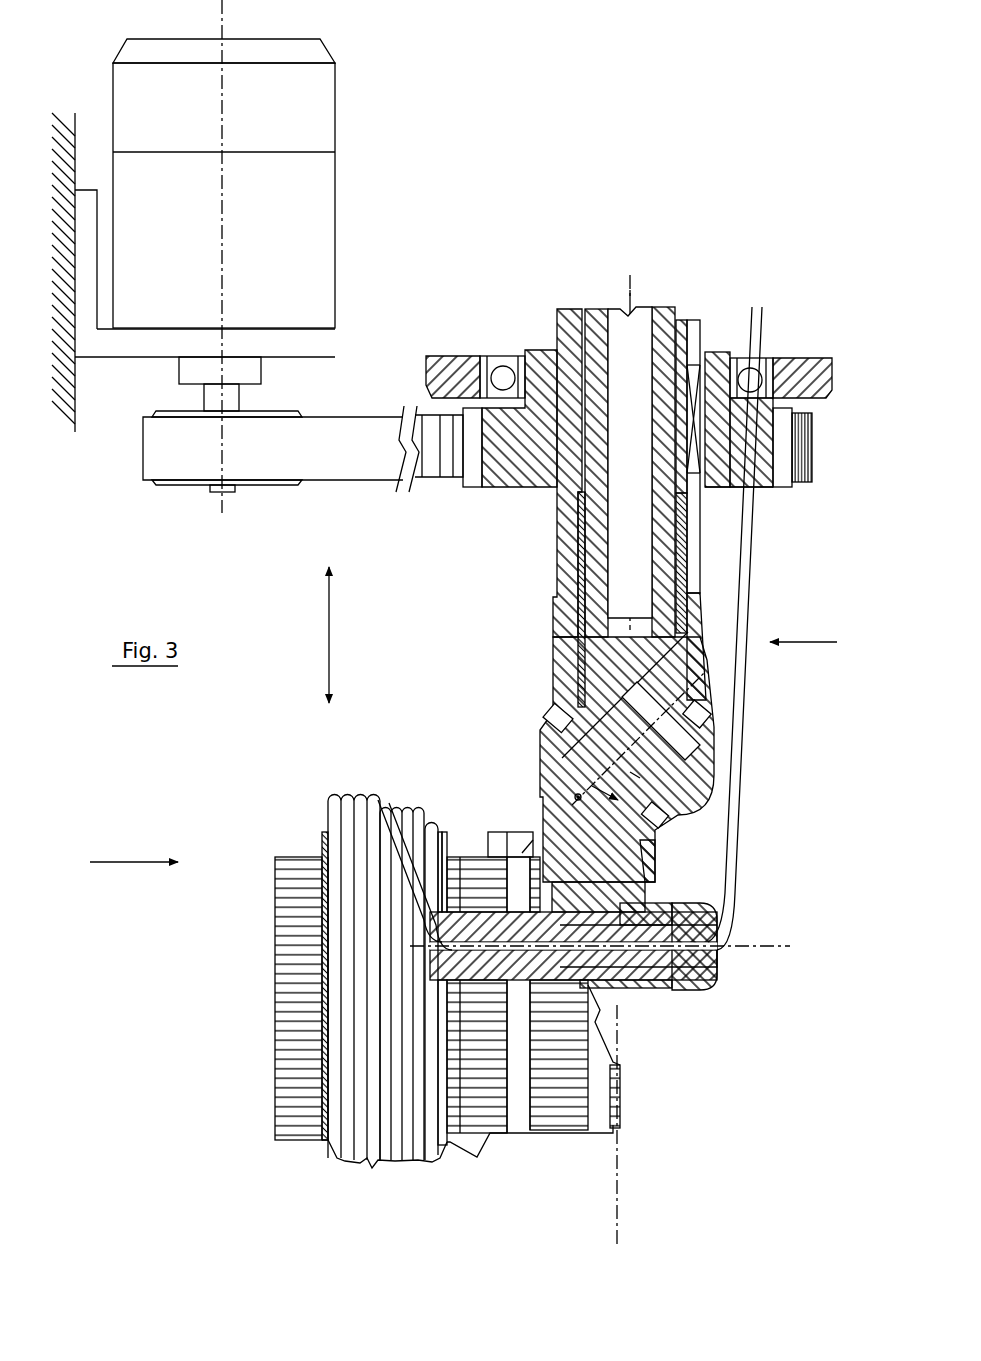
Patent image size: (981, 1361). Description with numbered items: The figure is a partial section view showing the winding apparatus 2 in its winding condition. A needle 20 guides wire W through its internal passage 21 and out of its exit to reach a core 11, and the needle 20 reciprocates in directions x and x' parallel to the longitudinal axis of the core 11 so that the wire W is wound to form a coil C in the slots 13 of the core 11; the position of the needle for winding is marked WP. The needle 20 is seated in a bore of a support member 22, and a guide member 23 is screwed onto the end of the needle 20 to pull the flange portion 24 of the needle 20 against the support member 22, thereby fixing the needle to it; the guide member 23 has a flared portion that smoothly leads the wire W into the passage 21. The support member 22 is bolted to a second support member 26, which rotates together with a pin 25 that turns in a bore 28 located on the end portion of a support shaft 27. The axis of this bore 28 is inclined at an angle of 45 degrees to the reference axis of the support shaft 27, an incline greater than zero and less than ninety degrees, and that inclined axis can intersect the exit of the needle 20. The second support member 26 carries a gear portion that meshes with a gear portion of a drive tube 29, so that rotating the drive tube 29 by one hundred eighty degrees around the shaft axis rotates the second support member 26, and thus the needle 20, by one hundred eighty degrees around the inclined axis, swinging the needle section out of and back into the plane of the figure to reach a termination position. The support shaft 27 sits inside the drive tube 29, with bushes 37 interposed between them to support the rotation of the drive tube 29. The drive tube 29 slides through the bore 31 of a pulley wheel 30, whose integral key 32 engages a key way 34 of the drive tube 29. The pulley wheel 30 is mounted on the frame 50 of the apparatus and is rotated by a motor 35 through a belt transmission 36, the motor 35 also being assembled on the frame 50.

The wire feed device 2 is at (805, 642).
The core 11 is at (280, 1012).
The slots 13 is at (325, 845).
The needle 20 is at (476, 985).
The needle passage 21 is at (598, 945).
The support member 22 is at (648, 890).
The guide member 23 is at (688, 985).
The flange portion 24 is at (517, 883).
The pin 25 is at (557, 675).
The second support member 26 is at (550, 733).
The support shaft 27 is at (662, 318).
The bore 28 is at (698, 640).
The drive tube 29 is at (568, 315).
The pulley wheel 30 is at (703, 362).
The bore 31 is at (553, 355).
The key 32 is at (708, 478).
The key way 34 is at (683, 332).
The motor 35 is at (318, 85).
The belt transmission 36 is at (342, 435).
The bushes 37 is at (580, 507).
The frame 50 is at (62, 118).
The wire W is at (738, 752).
The position for winding WP is at (134, 848).
The coil C is at (330, 913).
The directions X and X' x is at (342, 636).
The incline of 45° 45 is at (640, 778).